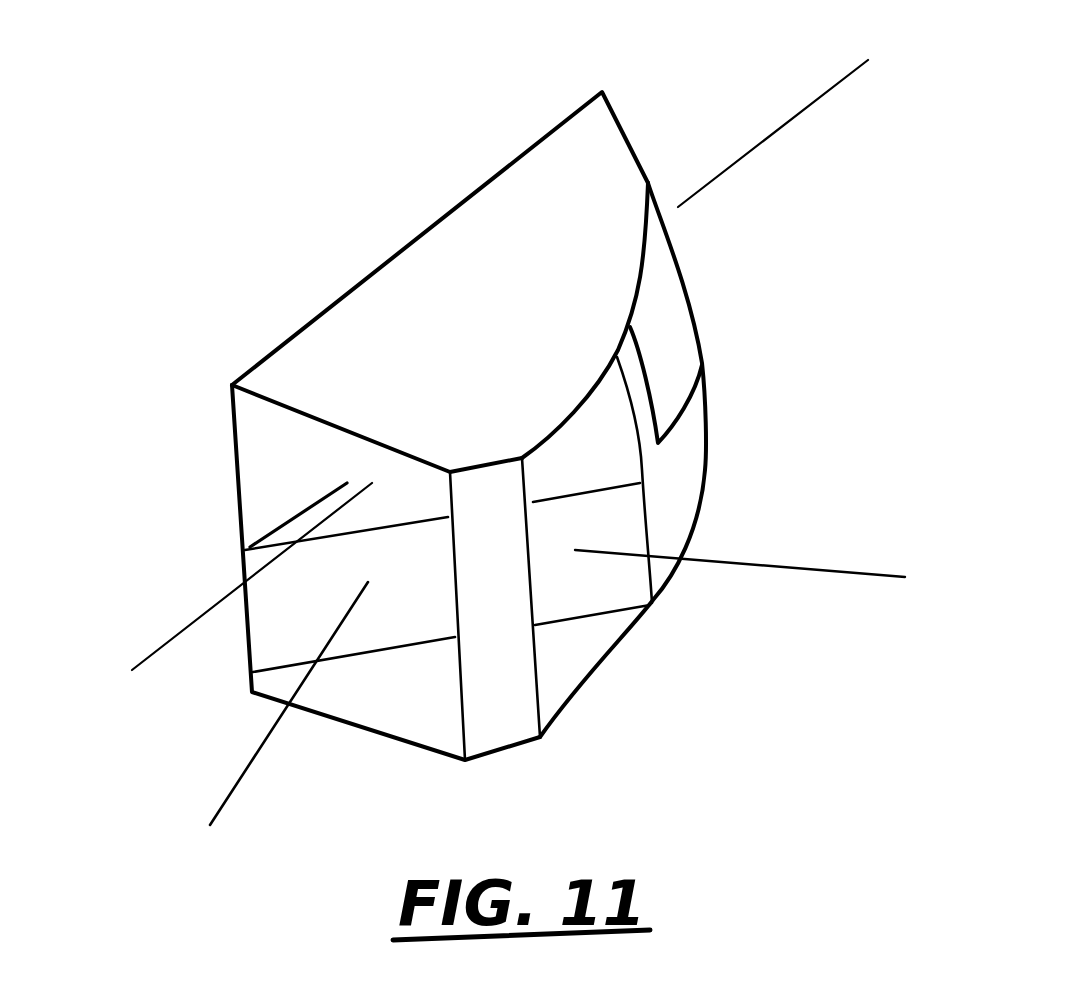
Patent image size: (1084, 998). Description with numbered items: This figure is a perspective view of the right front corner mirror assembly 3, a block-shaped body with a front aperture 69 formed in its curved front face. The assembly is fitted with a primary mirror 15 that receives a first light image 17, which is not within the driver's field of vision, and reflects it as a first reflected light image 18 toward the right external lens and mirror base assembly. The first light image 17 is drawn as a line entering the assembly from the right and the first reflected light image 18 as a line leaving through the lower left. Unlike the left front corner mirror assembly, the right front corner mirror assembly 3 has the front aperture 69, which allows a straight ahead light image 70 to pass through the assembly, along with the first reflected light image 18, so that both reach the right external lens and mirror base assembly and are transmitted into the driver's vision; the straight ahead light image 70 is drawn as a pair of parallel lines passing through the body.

The right front corner mirror assembly 3 is at (713, 427).
The primary mirror 15 is at (595, 592).
The first light image 17 is at (760, 563).
The first reflected light image 18 is at (260, 752).
The front aperture 69 is at (670, 327).
The straight ahead light image 70 is at (755, 142).